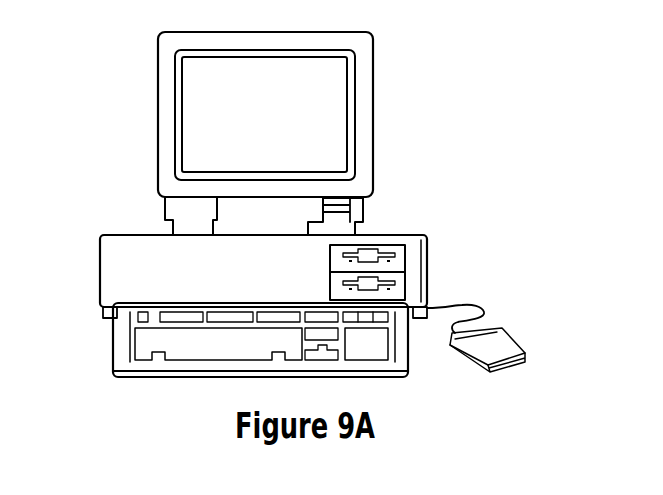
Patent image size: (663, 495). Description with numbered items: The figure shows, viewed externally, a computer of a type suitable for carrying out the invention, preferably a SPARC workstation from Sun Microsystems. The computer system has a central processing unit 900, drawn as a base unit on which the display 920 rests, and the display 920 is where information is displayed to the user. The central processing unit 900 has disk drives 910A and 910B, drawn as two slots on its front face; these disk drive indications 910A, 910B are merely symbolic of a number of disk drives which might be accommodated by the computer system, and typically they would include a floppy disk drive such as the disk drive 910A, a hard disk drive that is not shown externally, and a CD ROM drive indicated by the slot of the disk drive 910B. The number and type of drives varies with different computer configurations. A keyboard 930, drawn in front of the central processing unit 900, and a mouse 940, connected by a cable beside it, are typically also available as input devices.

The central processing unit 900 is at (114, 224).
The disk drive 910A is at (317, 261).
The disk drive 910B is at (317, 291).
The display 920 is at (386, 110).
The keyboard 930 is at (100, 342).
The mouse 940 is at (515, 325).